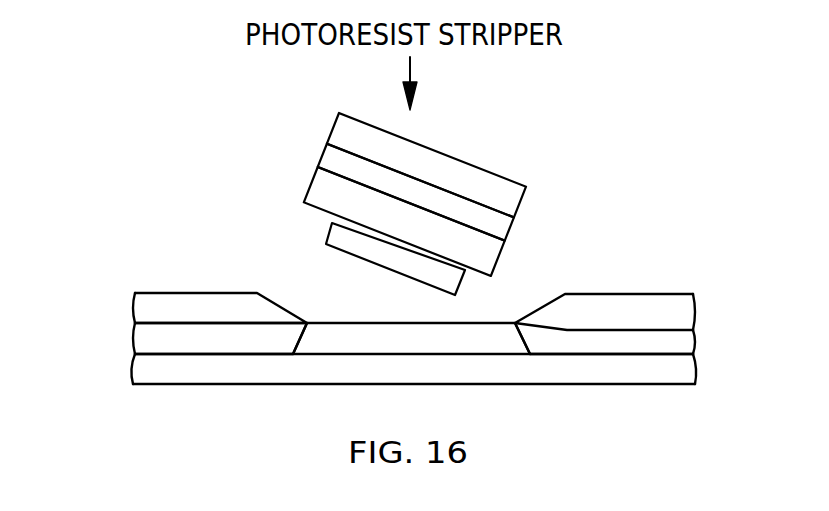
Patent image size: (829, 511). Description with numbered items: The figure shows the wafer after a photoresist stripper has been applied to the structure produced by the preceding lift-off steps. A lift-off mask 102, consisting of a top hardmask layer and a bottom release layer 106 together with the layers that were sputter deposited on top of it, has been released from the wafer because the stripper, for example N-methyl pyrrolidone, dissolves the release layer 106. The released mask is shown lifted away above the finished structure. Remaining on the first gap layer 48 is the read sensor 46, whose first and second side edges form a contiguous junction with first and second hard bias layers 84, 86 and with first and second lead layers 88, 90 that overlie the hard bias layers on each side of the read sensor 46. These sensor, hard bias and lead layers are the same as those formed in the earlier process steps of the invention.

The read sensor 46 is at (343, 327).
The first gap layer 48 is at (143, 371).
The first hard bias layer 84 is at (143, 341).
The second hard bias layer 86 is at (653, 345).
The first lead layer 88 is at (143, 310).
The second lead layer 90 is at (652, 312).
The lift-off mask 102 is at (548, 248).
The release layer 106 is at (337, 225).